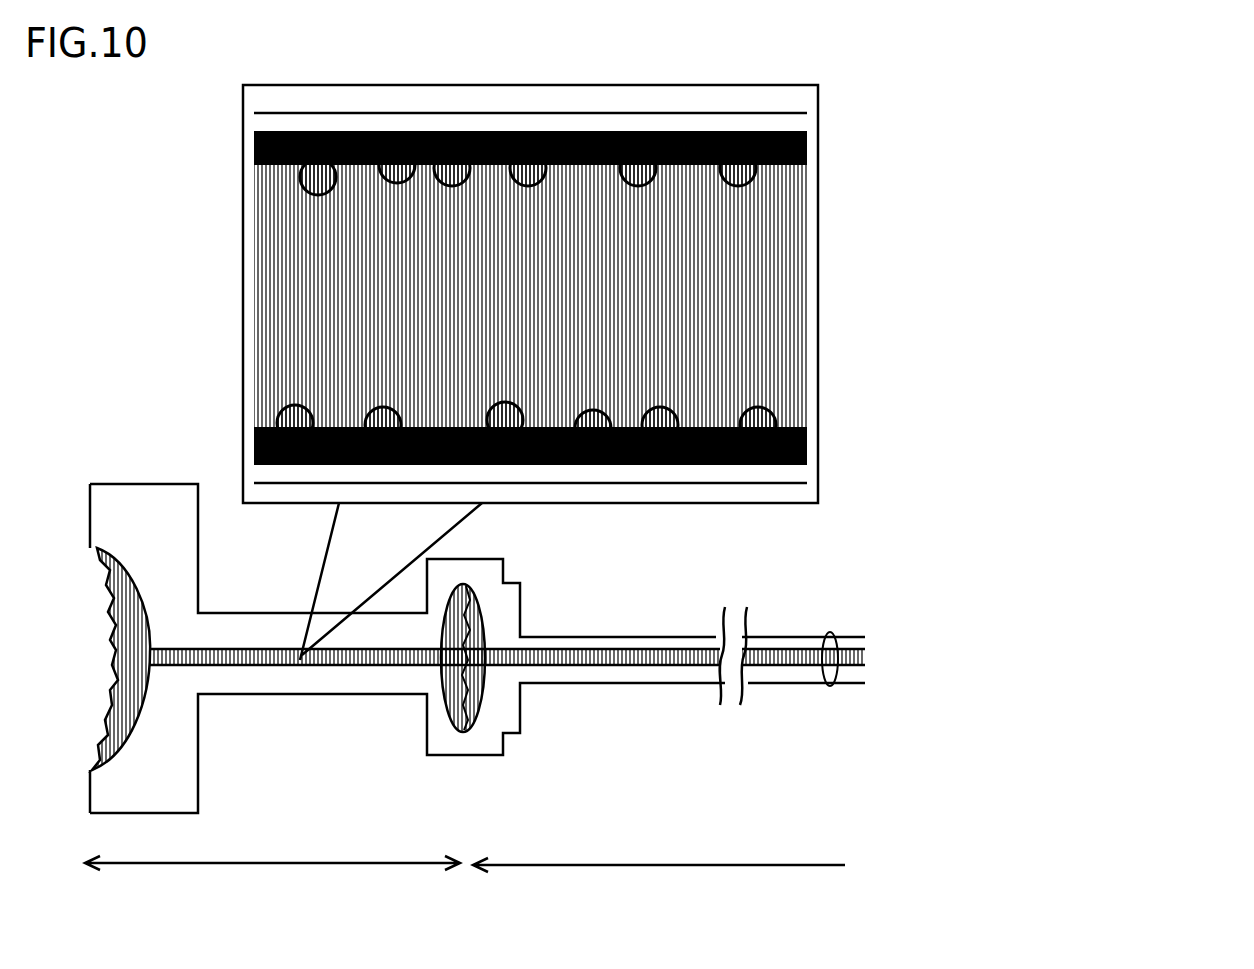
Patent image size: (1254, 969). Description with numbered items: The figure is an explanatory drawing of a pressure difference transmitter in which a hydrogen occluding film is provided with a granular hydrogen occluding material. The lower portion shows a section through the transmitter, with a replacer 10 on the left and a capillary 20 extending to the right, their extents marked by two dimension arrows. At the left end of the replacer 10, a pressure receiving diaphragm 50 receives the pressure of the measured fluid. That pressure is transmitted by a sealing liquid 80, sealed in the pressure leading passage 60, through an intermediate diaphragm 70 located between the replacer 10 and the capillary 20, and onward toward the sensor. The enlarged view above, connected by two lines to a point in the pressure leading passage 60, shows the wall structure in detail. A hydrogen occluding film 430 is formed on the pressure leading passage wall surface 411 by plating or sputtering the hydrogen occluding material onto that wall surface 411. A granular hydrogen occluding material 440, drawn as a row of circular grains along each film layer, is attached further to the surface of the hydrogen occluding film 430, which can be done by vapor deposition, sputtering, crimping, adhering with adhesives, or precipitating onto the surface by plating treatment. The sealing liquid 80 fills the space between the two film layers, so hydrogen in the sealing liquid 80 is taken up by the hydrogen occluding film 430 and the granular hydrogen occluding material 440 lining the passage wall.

The replacer 10 is at (272, 885).
The capillary 20 is at (659, 888).
The pressure receiving diaphragm 50 is at (96, 547).
The pressure leading passage 60 is at (828, 633).
The intermediate diaphragm 70 is at (480, 710).
The sealing liquid 80 is at (765, 286).
The pressure leading passage wall surface 411 is at (808, 123).
The hydrogen occluding film 430 is at (806, 452).
The granular hydrogen occluding material 440 is at (762, 418).